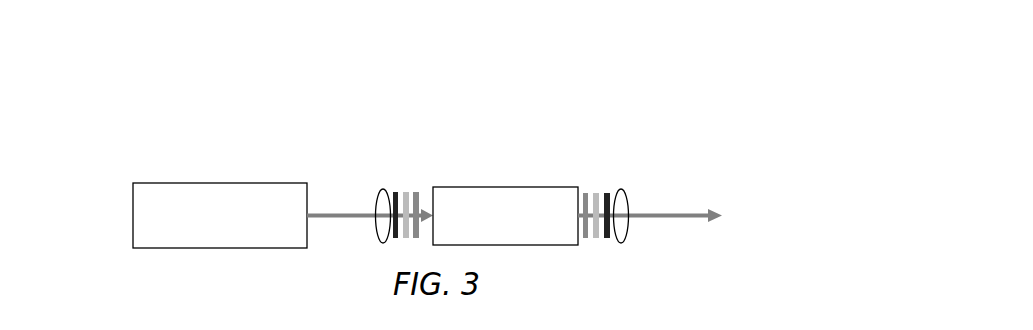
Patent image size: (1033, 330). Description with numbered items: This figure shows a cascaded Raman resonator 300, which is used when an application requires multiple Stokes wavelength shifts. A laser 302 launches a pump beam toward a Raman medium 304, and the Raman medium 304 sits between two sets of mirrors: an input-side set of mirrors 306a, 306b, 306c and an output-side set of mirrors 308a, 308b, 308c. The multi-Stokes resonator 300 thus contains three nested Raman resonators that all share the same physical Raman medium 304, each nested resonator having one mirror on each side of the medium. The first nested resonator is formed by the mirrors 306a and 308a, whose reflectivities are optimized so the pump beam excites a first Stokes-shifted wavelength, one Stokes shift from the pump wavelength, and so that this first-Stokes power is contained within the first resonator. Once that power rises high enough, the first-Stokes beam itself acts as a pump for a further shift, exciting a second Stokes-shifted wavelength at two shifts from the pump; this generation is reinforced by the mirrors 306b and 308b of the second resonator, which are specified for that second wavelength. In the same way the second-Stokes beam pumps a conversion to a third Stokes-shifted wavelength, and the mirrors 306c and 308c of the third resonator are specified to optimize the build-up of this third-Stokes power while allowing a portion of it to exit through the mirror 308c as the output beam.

The cascaded Raman resonator 300 is at (112, 157).
The laser 302 is at (230, 183).
The Raman medium 304 is at (511, 187).
The mirror 306a is at (416, 192).
The mirror 306b is at (406, 192).
The mirror 306c is at (396, 192).
The mirror 308a is at (586, 193).
The mirror 308b is at (596, 193).
The mirror 308c is at (607, 193).